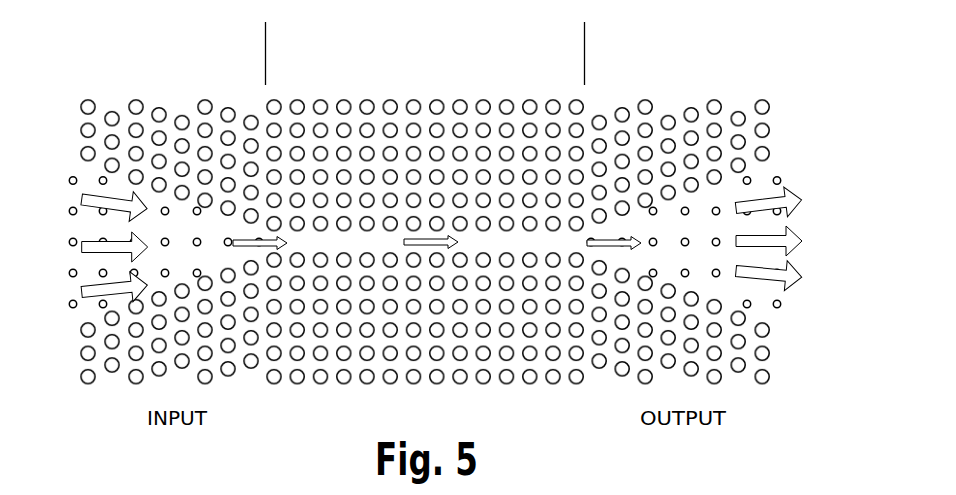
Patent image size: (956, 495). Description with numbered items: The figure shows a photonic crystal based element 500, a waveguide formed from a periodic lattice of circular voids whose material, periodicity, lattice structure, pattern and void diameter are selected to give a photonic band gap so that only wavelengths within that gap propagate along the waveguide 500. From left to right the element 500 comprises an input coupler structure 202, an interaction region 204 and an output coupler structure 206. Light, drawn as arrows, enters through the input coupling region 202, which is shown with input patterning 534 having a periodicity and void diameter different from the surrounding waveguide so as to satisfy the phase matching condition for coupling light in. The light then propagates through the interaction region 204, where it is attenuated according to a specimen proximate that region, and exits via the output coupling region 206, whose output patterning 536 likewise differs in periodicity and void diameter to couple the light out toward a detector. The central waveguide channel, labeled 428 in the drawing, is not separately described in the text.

The input coupler structure 202 is at (183, 45).
The interaction region 204 is at (439, 51).
The output coupler structure 206 is at (667, 46).
The photonic crystal waveguide 428 is at (549, 438).
The photonic crystal based element 500 is at (424, 248).
The input patterning 534 is at (90, 181).
The output patterning 536 is at (793, 188).